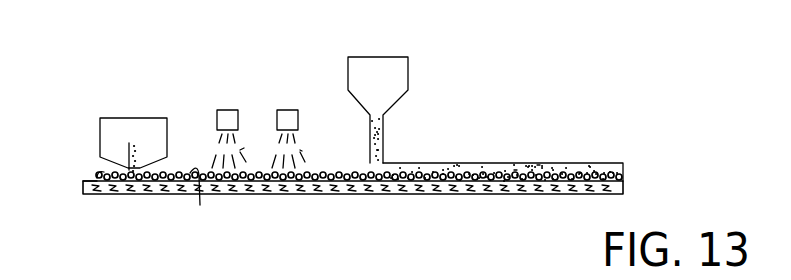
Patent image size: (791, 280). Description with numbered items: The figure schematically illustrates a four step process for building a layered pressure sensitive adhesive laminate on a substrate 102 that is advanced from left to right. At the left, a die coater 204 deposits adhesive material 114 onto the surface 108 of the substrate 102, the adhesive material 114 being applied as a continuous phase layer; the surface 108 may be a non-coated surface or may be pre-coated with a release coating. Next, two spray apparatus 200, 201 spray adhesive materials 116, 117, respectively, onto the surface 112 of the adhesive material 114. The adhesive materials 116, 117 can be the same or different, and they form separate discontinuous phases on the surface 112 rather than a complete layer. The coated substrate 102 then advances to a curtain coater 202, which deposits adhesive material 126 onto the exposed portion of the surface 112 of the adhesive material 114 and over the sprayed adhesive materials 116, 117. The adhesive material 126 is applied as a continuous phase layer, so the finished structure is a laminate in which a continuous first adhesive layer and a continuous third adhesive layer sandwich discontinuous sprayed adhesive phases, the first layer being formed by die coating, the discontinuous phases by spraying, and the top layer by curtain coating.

The substrate 102 is at (145, 193).
The surface 108 is at (85, 178).
The surface 112 is at (208, 199).
The adhesive material 114 is at (172, 175).
The adhesive material 116 is at (242, 150).
The adhesive material 117 is at (300, 150).
The adhesive material 126 is at (385, 135).
The spray apparatus 200 is at (227, 108).
The spray apparatus 201 is at (303, 80).
The curtain coater 202 is at (385, 57).
The die coater 204 is at (130, 118).